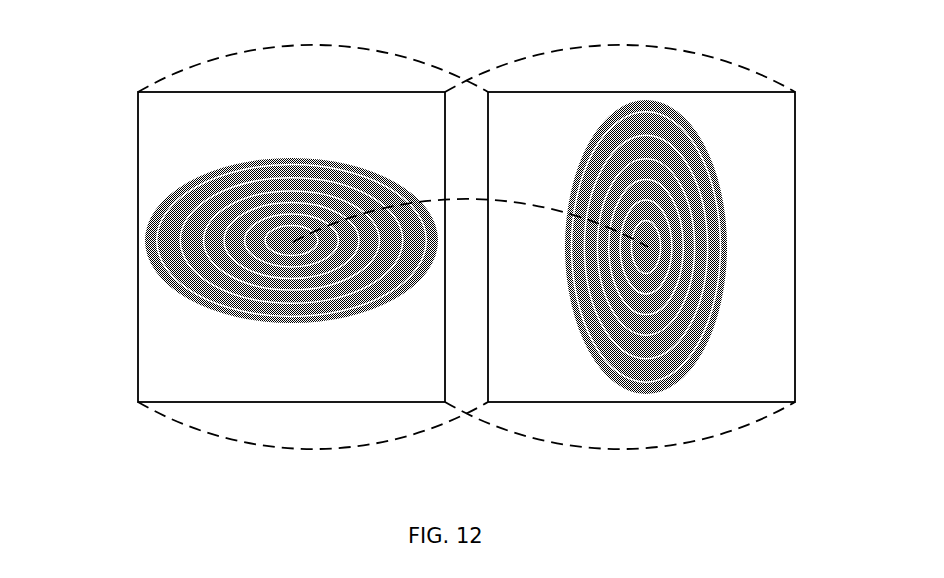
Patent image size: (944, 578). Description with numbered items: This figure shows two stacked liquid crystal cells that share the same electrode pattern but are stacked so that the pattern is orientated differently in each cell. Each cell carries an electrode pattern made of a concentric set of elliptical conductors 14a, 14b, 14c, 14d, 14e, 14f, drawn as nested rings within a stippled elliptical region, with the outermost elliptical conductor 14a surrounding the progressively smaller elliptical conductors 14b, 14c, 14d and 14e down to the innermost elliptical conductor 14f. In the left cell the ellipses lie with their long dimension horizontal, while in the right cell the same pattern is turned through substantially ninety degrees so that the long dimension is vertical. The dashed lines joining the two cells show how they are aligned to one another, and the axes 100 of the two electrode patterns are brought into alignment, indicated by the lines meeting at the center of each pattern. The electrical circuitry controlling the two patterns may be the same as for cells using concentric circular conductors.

The elliptical conductor 14a is at (248, 170).
The elliptical conductor 14b is at (240, 188).
The elliptical conductor 14c is at (227, 208).
The elliptical conductor 14d is at (227, 222).
The elliptical conductor 14e is at (222, 243).
The elliptical conductor 14f is at (283, 243).
The axes 100 is at (293, 242).